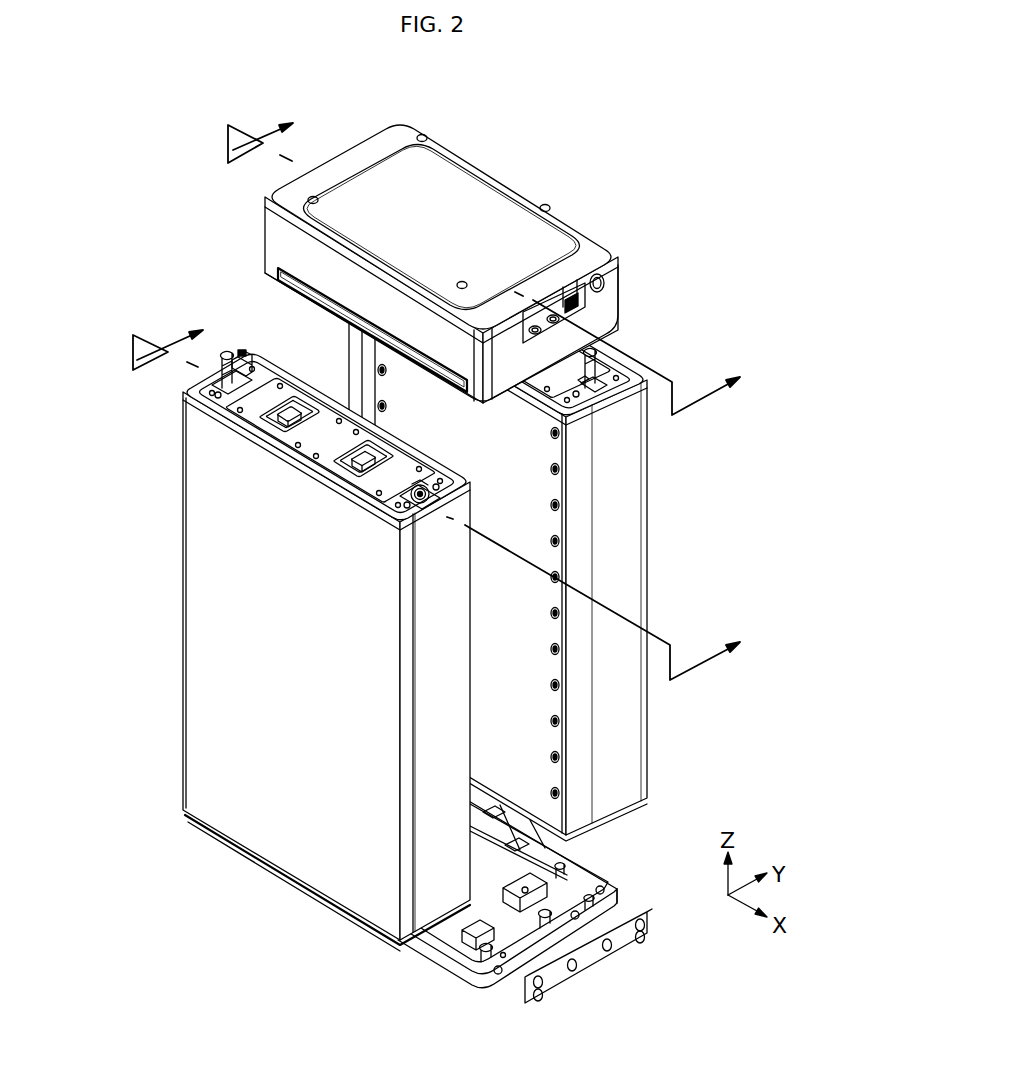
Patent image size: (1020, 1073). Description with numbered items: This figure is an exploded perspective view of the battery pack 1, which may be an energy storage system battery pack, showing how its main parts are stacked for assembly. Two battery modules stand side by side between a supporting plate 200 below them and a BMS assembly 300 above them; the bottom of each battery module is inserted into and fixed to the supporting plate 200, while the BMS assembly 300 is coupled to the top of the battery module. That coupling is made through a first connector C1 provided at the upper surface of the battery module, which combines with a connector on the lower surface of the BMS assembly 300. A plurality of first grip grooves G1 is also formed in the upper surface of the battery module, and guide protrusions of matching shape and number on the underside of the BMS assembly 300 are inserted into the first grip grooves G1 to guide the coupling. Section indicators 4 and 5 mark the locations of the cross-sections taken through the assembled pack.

The battery pack 1 is at (718, 146).
The supporting plate 200 is at (450, 955).
The BMS assembly 300 is at (507, 190).
The first connector C1 is at (241, 359).
The first grip groove G1 is at (292, 410).
The section line 4- 4 is at (500, 261).
The section line 5- 5 is at (453, 491).